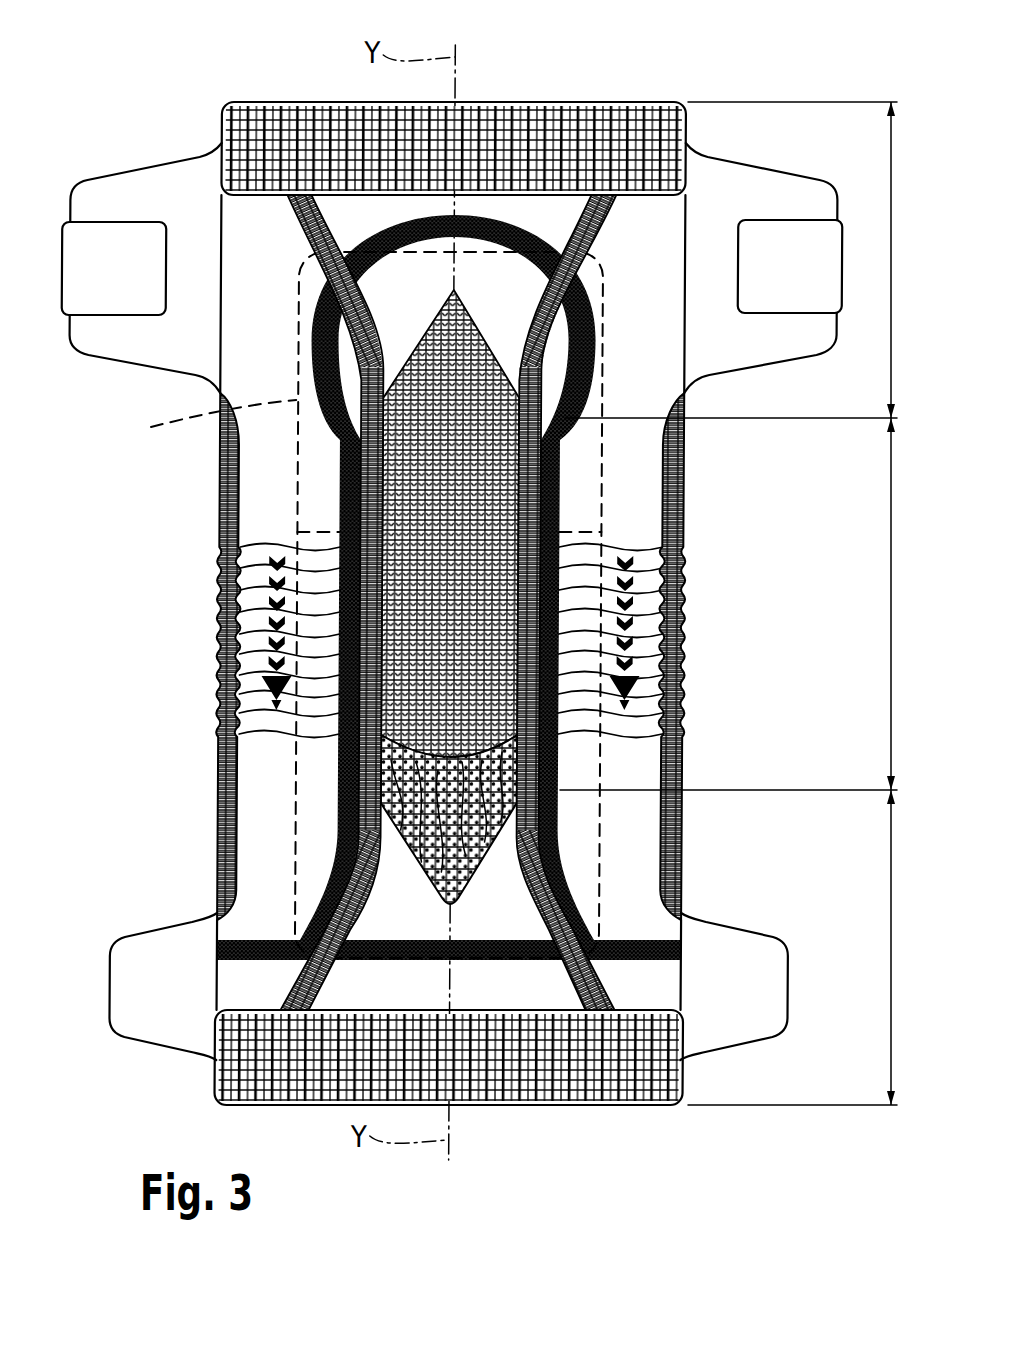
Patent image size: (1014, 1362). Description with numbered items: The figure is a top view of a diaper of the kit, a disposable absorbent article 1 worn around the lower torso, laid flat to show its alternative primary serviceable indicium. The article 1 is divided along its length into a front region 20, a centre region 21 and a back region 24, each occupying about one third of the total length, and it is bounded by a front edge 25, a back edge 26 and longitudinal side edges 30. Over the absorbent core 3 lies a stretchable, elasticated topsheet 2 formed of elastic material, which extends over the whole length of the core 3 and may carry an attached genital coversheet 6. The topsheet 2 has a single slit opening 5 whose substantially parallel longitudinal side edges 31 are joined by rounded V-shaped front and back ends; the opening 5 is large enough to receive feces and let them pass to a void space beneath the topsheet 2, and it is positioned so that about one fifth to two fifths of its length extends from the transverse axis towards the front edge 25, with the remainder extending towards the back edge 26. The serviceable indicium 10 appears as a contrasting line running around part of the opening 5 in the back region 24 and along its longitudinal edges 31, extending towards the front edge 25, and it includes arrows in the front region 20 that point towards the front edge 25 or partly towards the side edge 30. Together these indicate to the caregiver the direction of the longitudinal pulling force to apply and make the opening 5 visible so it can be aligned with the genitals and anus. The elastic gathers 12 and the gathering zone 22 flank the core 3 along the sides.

The disposable absorbent article 1 is at (128, 103).
The topsheet 2 is at (273, 500).
The absorbent core 3 is at (444, 463).
The opening 5 is at (470, 505).
The genital coversheet 6 is at (463, 816).
The serviceable indicium 10 is at (528, 225).
The leg elastic strands 12 is at (243, 641).
The front region 20 is at (798, 947).
The centre region 21 is at (731, 604).
The elastic gathering zone 22 is at (696, 543).
The back region 24 is at (737, 260).
The front edge 25 is at (548, 1106).
The back edge 26 is at (314, 101).
The side edge 30 is at (230, 825).
The longitudinal side edges 31 is at (372, 786).